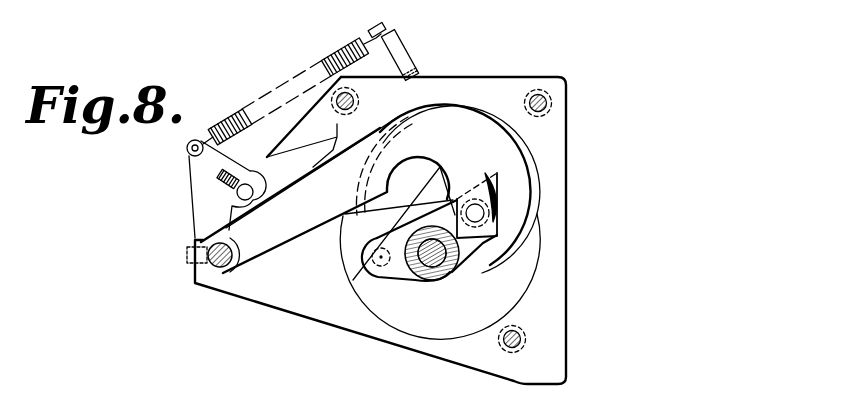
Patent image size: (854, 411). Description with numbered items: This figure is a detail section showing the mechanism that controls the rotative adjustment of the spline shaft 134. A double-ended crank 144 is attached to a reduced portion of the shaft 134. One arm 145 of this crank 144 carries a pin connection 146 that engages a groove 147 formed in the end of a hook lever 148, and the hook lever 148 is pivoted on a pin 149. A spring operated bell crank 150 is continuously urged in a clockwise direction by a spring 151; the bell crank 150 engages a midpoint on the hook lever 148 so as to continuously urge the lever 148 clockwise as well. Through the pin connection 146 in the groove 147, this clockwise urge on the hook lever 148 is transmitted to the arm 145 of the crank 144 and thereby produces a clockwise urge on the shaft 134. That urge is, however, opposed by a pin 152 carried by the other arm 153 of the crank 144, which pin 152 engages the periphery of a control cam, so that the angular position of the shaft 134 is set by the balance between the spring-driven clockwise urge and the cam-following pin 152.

The spline shaft 134 is at (430, 263).
The double-ended crank 144 is at (393, 277).
The arm 145 is at (482, 248).
The pin connection 146 is at (490, 213).
The groove 147 is at (462, 196).
The hook lever 148 is at (442, 142).
The pin 149 is at (221, 265).
The spring operated bell crank 150 is at (201, 172).
The spring 151 is at (339, 44).
The pin 152 is at (371, 258).
The arm 153 is at (380, 270).